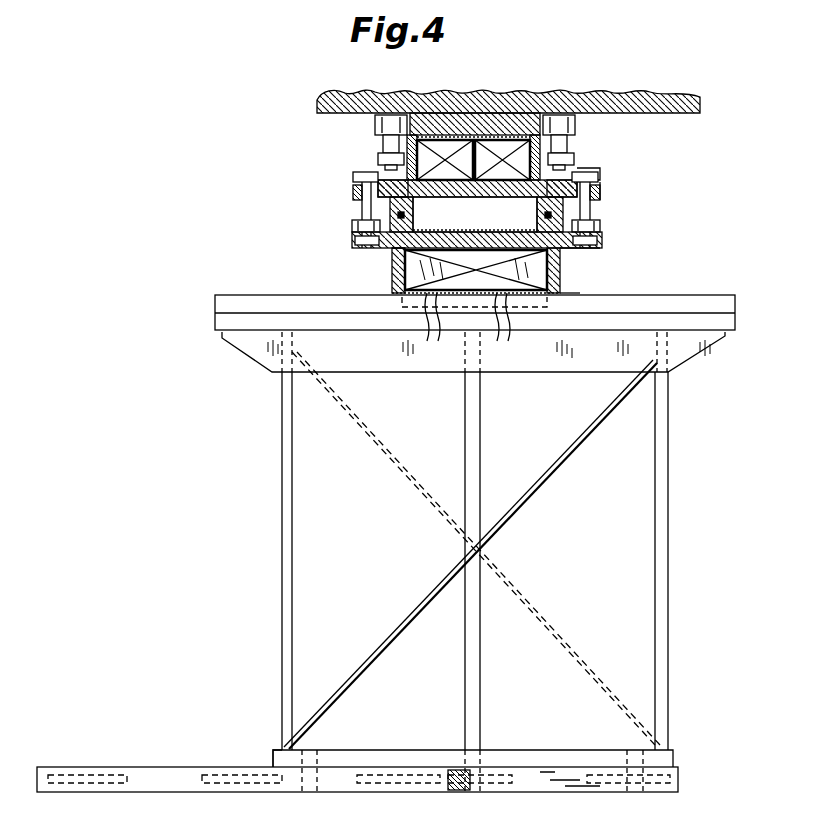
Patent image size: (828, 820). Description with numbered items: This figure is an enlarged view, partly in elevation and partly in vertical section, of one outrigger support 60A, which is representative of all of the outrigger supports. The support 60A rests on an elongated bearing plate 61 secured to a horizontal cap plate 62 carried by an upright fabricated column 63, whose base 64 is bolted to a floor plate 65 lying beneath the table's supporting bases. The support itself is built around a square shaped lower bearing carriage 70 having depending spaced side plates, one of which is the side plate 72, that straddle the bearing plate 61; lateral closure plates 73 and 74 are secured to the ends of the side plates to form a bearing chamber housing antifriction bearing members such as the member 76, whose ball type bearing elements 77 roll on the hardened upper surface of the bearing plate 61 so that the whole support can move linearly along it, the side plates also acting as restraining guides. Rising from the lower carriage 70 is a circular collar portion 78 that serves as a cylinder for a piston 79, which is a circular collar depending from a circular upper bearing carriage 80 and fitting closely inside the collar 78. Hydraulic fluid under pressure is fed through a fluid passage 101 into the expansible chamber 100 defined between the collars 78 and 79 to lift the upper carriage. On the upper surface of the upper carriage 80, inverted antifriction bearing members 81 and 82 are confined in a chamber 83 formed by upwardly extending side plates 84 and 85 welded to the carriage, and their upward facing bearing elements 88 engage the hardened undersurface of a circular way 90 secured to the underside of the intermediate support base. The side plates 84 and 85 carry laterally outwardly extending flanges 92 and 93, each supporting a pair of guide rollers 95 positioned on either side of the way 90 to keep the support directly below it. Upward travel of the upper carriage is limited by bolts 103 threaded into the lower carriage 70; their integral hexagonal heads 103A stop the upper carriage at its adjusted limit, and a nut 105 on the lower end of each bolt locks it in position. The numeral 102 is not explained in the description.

The outrigger support 60A is at (604, 200).
The bearing plate 61 is at (706, 300).
The cap plate 62 is at (703, 320).
The fabricated column 63 is at (668, 542).
The base 64 is at (278, 750).
The floor plate 65 is at (682, 783).
The lower bearing carriage 70 is at (578, 249).
The side plate 72 is at (405, 310).
The lateral closure plate 73 is at (393, 265).
The lateral closure plate 74 is at (578, 296).
The antifriction bearing member 76 is at (498, 275).
The antifriction bearing elements 77 is at (477, 327).
The circular collar portion 78 is at (350, 223).
The piston 79 is at (390, 248).
The upper bearing carriage 80 is at (600, 192).
The antifriction bearing member 81 is at (420, 214).
The antifriction bearing member 82 is at (531, 214).
The chamber 83 is at (397, 170).
The side plate 84 is at (363, 175).
The side plate 85 is at (580, 166).
The bearing elements 88 is at (450, 140).
The circular way 90 is at (520, 113).
The flange 92 is at (378, 148).
The flange 93 is at (576, 150).
The guide rollers 95 is at (391, 117).
The expansible chamber 100 is at (493, 227).
The fluid passage 101 is at (474, 269).
The plate portion 102 is at (565, 178).
The bolts 103 is at (355, 210).
The hexagonal heads 103A is at (350, 192).
The nut 105 is at (350, 238).